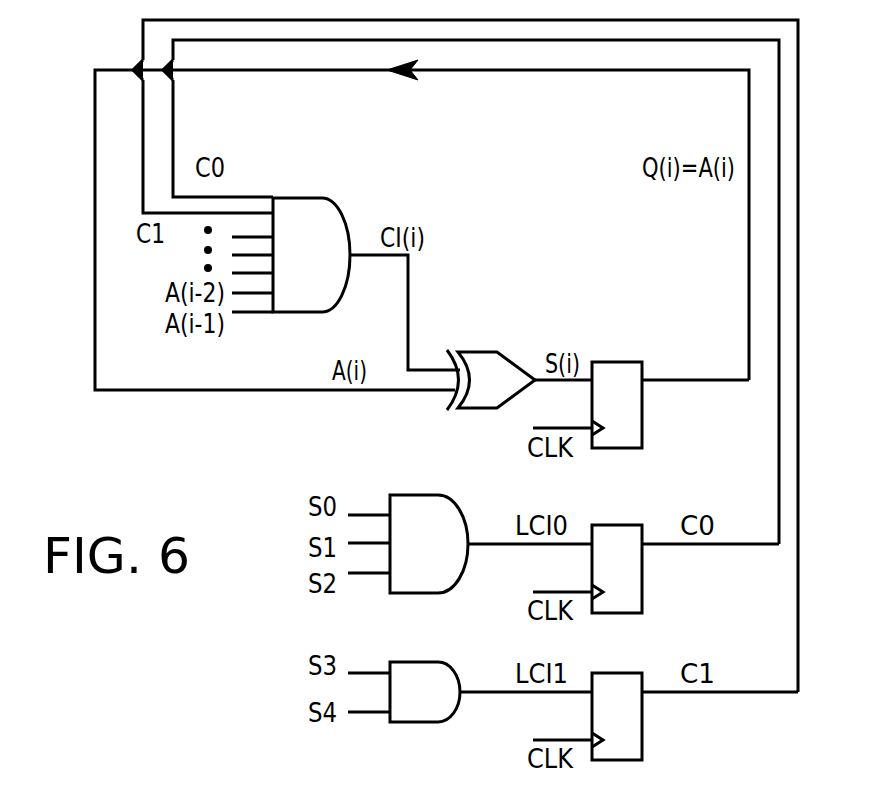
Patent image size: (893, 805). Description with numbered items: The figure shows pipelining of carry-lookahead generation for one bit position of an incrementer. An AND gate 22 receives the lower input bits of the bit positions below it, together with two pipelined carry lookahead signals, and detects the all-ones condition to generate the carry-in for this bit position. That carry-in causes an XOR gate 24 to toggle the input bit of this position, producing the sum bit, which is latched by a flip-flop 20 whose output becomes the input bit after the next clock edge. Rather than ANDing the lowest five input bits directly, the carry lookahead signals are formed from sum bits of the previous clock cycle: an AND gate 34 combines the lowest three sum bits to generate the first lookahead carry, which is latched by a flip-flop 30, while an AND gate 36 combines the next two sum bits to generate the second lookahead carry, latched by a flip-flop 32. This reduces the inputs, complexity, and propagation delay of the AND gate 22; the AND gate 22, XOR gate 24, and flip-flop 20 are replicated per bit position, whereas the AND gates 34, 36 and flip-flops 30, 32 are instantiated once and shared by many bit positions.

The flip-flop 20 is at (630, 405).
The AND gate 22 is at (328, 270).
The XOR gate 24 is at (502, 395).
The flip-flop 30 is at (630, 570).
The flip-flop 32 is at (630, 718).
The AND gate 34 is at (432, 560).
The AND gate 36 is at (432, 707).